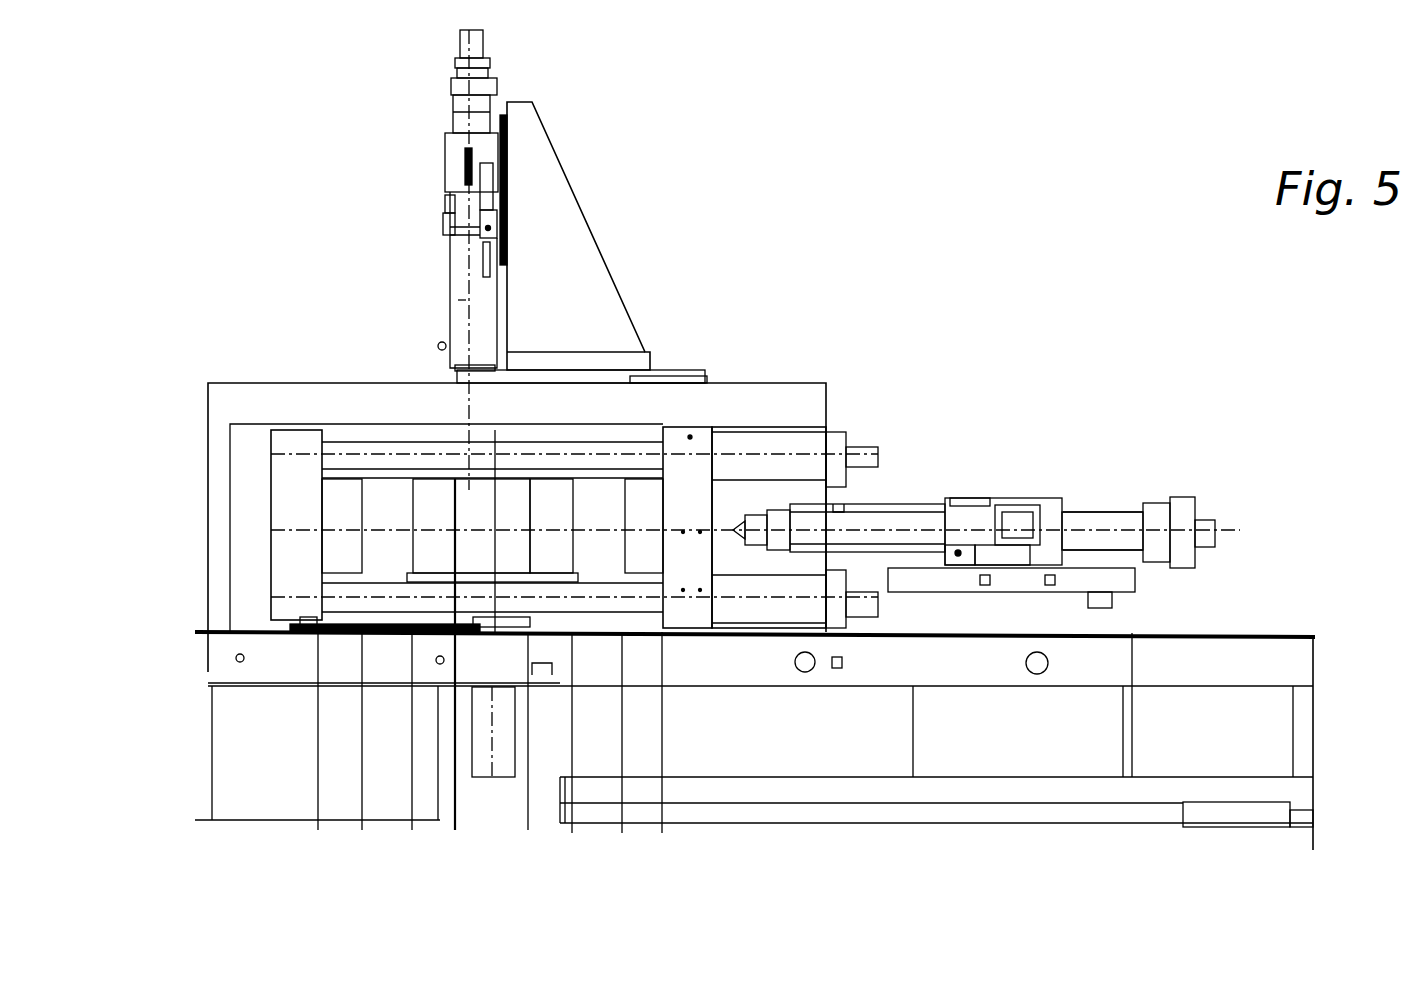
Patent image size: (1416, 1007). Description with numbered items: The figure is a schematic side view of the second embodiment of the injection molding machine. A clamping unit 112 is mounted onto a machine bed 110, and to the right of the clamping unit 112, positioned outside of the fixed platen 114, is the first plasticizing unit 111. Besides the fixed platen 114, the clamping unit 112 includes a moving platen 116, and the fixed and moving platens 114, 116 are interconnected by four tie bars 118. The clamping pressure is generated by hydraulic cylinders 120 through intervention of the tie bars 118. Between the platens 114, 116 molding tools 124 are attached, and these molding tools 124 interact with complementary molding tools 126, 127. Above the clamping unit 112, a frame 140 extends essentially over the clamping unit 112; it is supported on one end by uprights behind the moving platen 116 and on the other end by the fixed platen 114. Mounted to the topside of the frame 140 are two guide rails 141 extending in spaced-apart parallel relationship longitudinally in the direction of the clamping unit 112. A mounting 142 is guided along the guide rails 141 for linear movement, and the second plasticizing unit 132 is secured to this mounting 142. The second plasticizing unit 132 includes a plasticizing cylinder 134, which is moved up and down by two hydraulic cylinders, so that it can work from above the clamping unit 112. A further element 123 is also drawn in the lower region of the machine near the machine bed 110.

The machine bed 110 is at (1283, 662).
The first plasticizing unit 111 is at (1090, 493).
The clamping unit 112 is at (365, 428).
The fixed platen 114 is at (700, 438).
The moving platen 116 is at (275, 510).
The tie bars 118 is at (613, 448).
The hydraulic cylinders 120 is at (828, 432).
The support column 123 is at (497, 768).
The molding tools 124 is at (475, 555).
The complementary molding tool 126 is at (643, 557).
The complementary molding tool 127 is at (328, 542).
The second plasticizing unit 132 is at (397, 200).
The plasticizing cylinder 134 is at (457, 295).
The frame 140 is at (248, 398).
The guide rails 141 is at (684, 376).
The mounting 142 is at (552, 182).